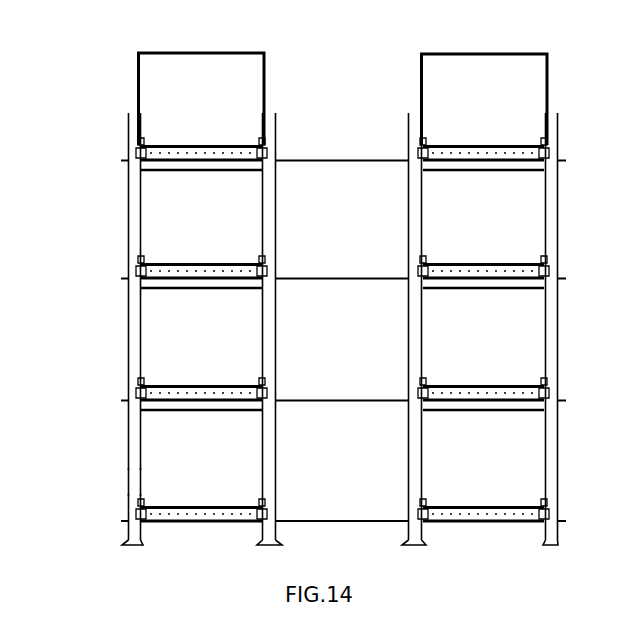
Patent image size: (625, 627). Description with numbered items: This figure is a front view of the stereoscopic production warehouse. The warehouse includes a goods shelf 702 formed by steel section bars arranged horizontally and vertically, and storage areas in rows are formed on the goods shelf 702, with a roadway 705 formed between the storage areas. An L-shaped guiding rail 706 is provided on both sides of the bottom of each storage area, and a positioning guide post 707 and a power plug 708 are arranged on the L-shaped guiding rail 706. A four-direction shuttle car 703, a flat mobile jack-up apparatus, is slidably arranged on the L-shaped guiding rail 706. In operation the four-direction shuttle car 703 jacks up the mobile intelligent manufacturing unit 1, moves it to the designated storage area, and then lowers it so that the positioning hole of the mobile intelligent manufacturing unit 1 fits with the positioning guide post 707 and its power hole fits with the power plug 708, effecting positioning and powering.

The mobile intelligent manufacturing unit 1 is at (148, 77).
The goods shelf 702 is at (93, 329).
The four-direction shuttle car 703 is at (155, 265).
The roadway 705 is at (338, 518).
The L-shaped guiding rail 706 is at (130, 502).
The positioning guide post 707 is at (130, 480).
The power plug 708 is at (257, 503).